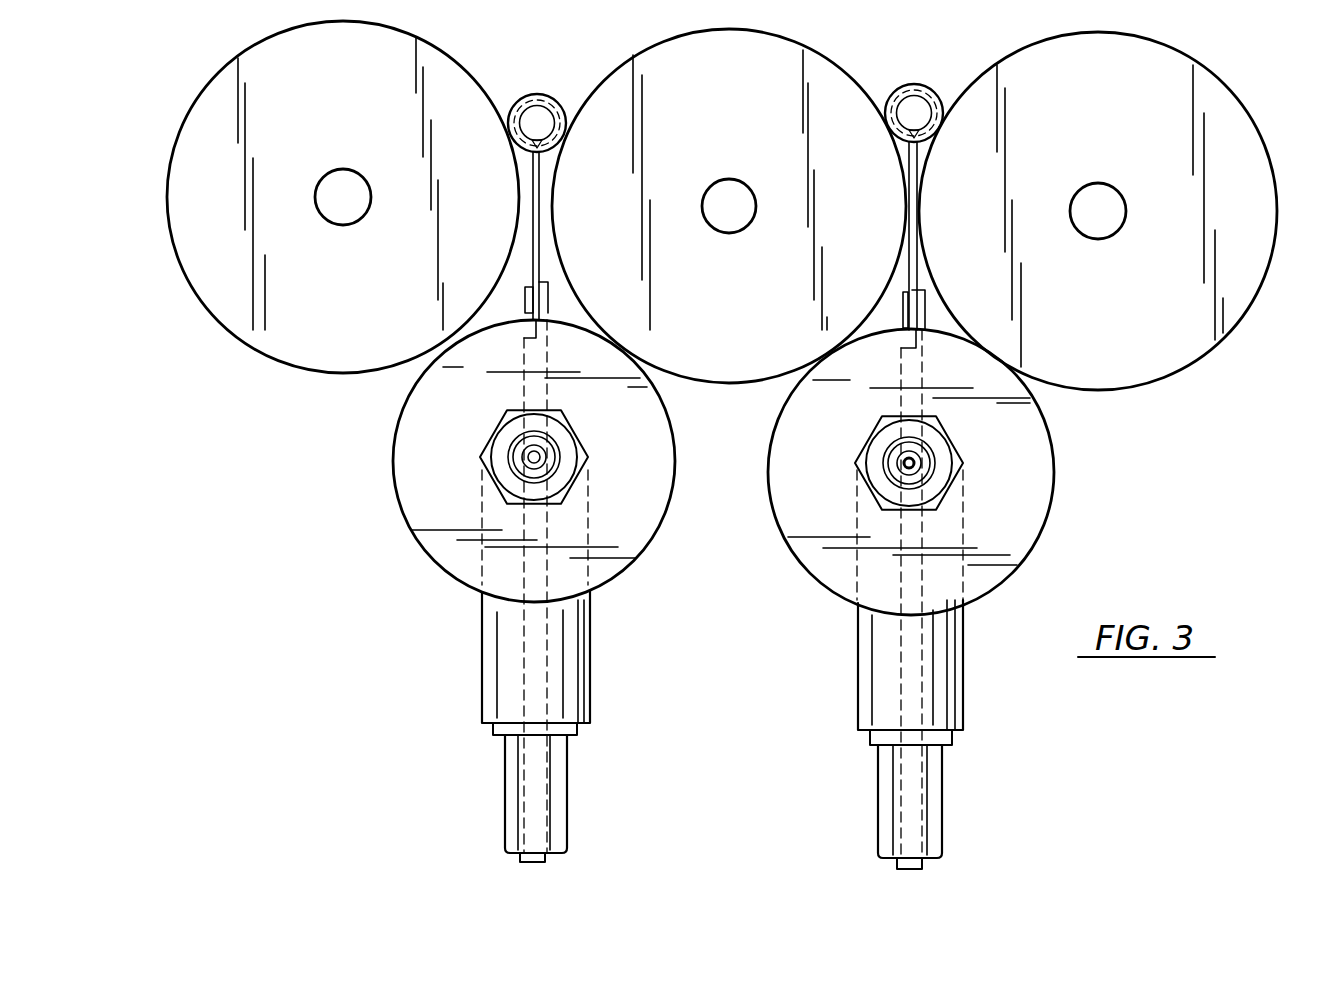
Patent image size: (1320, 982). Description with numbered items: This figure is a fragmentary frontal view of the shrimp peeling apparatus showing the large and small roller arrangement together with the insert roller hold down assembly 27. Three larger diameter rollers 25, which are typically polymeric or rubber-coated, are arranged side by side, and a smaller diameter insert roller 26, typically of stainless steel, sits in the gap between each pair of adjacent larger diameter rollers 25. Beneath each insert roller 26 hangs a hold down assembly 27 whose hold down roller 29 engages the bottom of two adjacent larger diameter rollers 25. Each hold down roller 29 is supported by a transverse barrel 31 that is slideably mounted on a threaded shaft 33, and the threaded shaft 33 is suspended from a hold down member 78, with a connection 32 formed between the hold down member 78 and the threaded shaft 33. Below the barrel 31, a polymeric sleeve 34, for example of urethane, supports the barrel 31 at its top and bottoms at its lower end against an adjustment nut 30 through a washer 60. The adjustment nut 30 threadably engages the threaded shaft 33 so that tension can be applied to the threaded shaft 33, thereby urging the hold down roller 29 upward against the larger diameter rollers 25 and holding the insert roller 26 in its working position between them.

The larger diameter roller 25 is at (358, 112).
The smaller diameter insert roller 26 is at (550, 92).
The hold down member 78 is at (533, 198).
The connection 32 is at (525, 293).
The hold down roller 29 is at (422, 468).
The hold down assembly 27 is at (645, 452).
The transverse barrel 31 is at (522, 660).
The threaded shaft 33 is at (553, 522).
The sleeve 34 is at (588, 655).
The washer 60 is at (577, 732).
The adjustment nut 30 is at (567, 792).